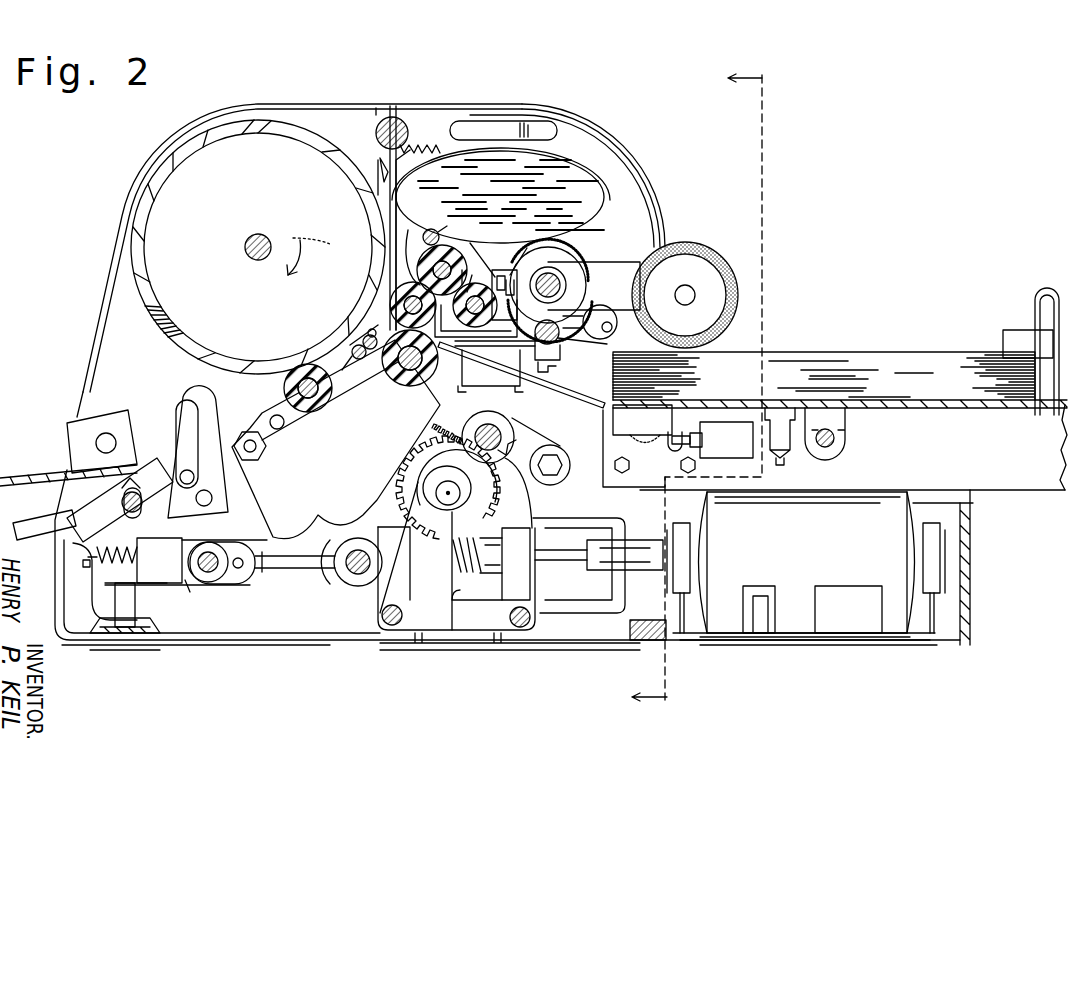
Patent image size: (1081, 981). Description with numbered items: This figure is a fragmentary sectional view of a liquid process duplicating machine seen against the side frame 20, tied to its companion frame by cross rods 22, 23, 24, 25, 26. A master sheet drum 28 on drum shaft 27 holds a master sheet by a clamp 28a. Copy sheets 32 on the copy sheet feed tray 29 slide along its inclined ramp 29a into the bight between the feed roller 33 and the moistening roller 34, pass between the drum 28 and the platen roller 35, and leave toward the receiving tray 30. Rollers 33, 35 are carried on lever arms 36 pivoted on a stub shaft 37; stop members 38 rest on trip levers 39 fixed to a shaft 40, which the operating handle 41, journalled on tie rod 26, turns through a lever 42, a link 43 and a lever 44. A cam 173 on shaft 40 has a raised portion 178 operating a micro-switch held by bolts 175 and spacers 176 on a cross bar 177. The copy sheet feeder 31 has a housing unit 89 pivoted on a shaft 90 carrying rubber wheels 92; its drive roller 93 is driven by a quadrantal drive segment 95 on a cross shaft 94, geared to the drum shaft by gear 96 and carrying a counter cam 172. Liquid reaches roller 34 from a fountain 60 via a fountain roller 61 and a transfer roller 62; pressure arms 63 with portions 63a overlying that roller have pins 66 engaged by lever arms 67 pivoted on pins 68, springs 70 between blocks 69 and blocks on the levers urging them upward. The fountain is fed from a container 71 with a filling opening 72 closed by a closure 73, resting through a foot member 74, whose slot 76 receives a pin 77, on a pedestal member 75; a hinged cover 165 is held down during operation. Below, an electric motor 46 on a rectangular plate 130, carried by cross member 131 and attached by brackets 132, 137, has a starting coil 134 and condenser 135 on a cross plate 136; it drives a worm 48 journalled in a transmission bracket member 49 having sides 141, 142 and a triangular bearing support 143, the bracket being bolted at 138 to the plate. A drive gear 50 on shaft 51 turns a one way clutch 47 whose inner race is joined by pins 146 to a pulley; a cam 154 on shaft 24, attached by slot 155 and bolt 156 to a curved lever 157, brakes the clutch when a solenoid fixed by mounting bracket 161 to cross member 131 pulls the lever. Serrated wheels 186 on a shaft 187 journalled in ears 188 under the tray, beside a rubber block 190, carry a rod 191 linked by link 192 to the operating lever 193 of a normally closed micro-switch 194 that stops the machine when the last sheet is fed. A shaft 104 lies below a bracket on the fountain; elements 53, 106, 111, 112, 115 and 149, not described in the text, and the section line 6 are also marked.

The section line 6 is at (699, 390).
The frame 20 is at (140, 391).
The pivot 22 is at (403, 614).
The pivot 23 is at (529, 623).
The roller 24 is at (508, 432).
The roller 25 is at (376, 133).
The roller 26 is at (120, 496).
The drum shaft 27 is at (256, 256).
The drum 28 is at (140, 266).
The drum segment 28a is at (165, 333).
The table plate 29 is at (843, 408).
The inclined plate 29a is at (521, 375).
The bracket plate 30 is at (100, 431).
The feed roller 31 is at (731, 268).
The paper stack 32 is at (905, 365).
The ink roller 33 is at (411, 387).
The ink roller 34 is at (413, 297).
The ink roller 35 is at (284, 389).
The roller plate 36 is at (357, 445).
The pivot nut 37 is at (258, 450).
The shaft 38 is at (264, 572).
The housing 39 is at (244, 578).
The roller 40 is at (208, 574).
The lever arm 41 is at (44, 520).
The link bar 42 is at (157, 468).
The lever 43 is at (198, 459).
The block 44 is at (154, 546).
The motor 46 is at (820, 536).
The gear 47 is at (414, 446).
The spring 48 is at (488, 574).
The solenoid 49 is at (532, 522).
The cam 50 is at (466, 500).
The gear shaft 51 is at (446, 497).
The ratchet 53 is at (441, 436).
The roller 60 is at (476, 310).
The blade 61 is at (473, 272).
The roller 62 is at (468, 262).
The roller 63 is at (420, 257).
The roller 63a is at (447, 248).
The pin 66 is at (368, 335).
The gear 67 is at (372, 349).
The pin 68 is at (286, 431).
The gear 69 is at (362, 360).
The link 70 is at (351, 380).
The ink fountain 71 is at (552, 225).
The fountain cover 72 is at (556, 139).
The vent 73 is at (528, 128).
The ring 74 is at (556, 256).
The ductor 75 is at (501, 286).
The ductor 76 is at (510, 280).
The hopper 77 is at (498, 258).
The arm 89 is at (622, 285).
The roller 90 is at (560, 285).
The roller surface 92 is at (723, 292).
The ring 93 is at (583, 262).
The pin 94 is at (434, 233).
The spring 95 is at (430, 139).
The pawl 96 is at (376, 178).
The roller 104 is at (549, 343).
The bar 106 is at (512, 345).
The hook 111 is at (552, 375).
The link 112 is at (578, 341).
The cam 115 is at (603, 316).
The base plate 130 is at (797, 645).
The block 131 is at (660, 622).
The bracket 132 is at (906, 645).
The box 134 is at (860, 612).
The box 135 is at (772, 594).
The plate 136 is at (845, 645).
The bracket 137 is at (704, 645).
The fastener 138 is at (420, 645).
The block 141 is at (518, 564).
The block 142 is at (394, 563).
The lever 143 is at (432, 575).
The plate 146 is at (490, 624).
The spring 149 is at (465, 566).
The column 154 is at (494, 412).
The pawl 155 is at (512, 445).
The nut 156 is at (552, 455).
The arm 157 is at (526, 473).
The plunger 161 is at (596, 614).
The cover arc 165 is at (618, 160).
The block 172 is at (172, 580).
The bar 173 is at (220, 587).
The spring 175 is at (106, 581).
The block 176 is at (136, 605).
The foot 177 is at (100, 630).
The pin 178 is at (185, 580).
The gear 186 is at (636, 447).
The pin 187 is at (640, 413).
The box 188 is at (642, 426).
The tray wall 190 is at (610, 400).
The clip 191 is at (663, 447).
The switch 192 is at (678, 446).
The nuts 193 is at (655, 465).
The box 194 is at (726, 440).